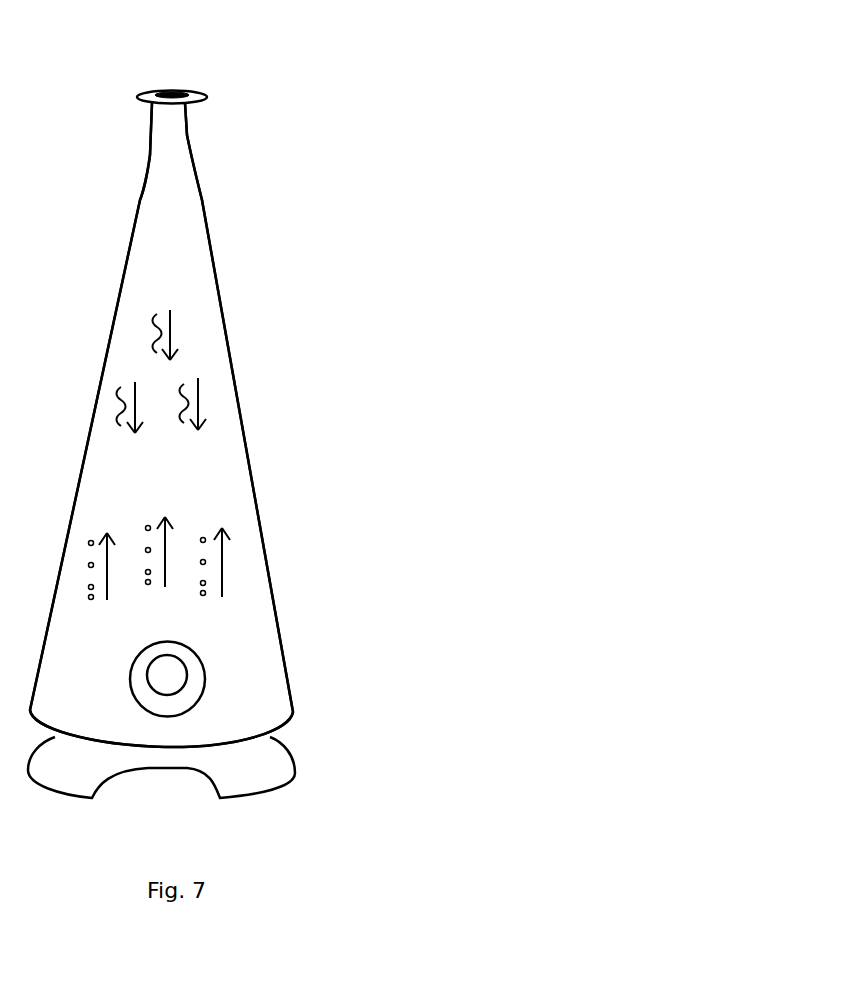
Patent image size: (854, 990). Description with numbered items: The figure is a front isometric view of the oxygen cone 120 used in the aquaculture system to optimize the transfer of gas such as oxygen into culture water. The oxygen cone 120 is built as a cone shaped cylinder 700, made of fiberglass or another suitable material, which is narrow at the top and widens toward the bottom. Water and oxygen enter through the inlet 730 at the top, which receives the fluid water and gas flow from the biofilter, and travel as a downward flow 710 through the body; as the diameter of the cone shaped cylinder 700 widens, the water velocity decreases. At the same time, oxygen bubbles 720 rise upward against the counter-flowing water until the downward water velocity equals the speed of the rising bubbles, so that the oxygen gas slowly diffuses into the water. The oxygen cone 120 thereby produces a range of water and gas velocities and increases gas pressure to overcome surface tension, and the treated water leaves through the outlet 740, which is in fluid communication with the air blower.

The oxygen cone 120 is at (442, 103).
The cone shaped cylinder 700 is at (222, 313).
The downward water and oxygen flow 710 is at (162, 354).
The rising oxygen bubbles 720 is at (171, 577).
The inlet 730 is at (173, 92).
The outlet 740 is at (167, 680).